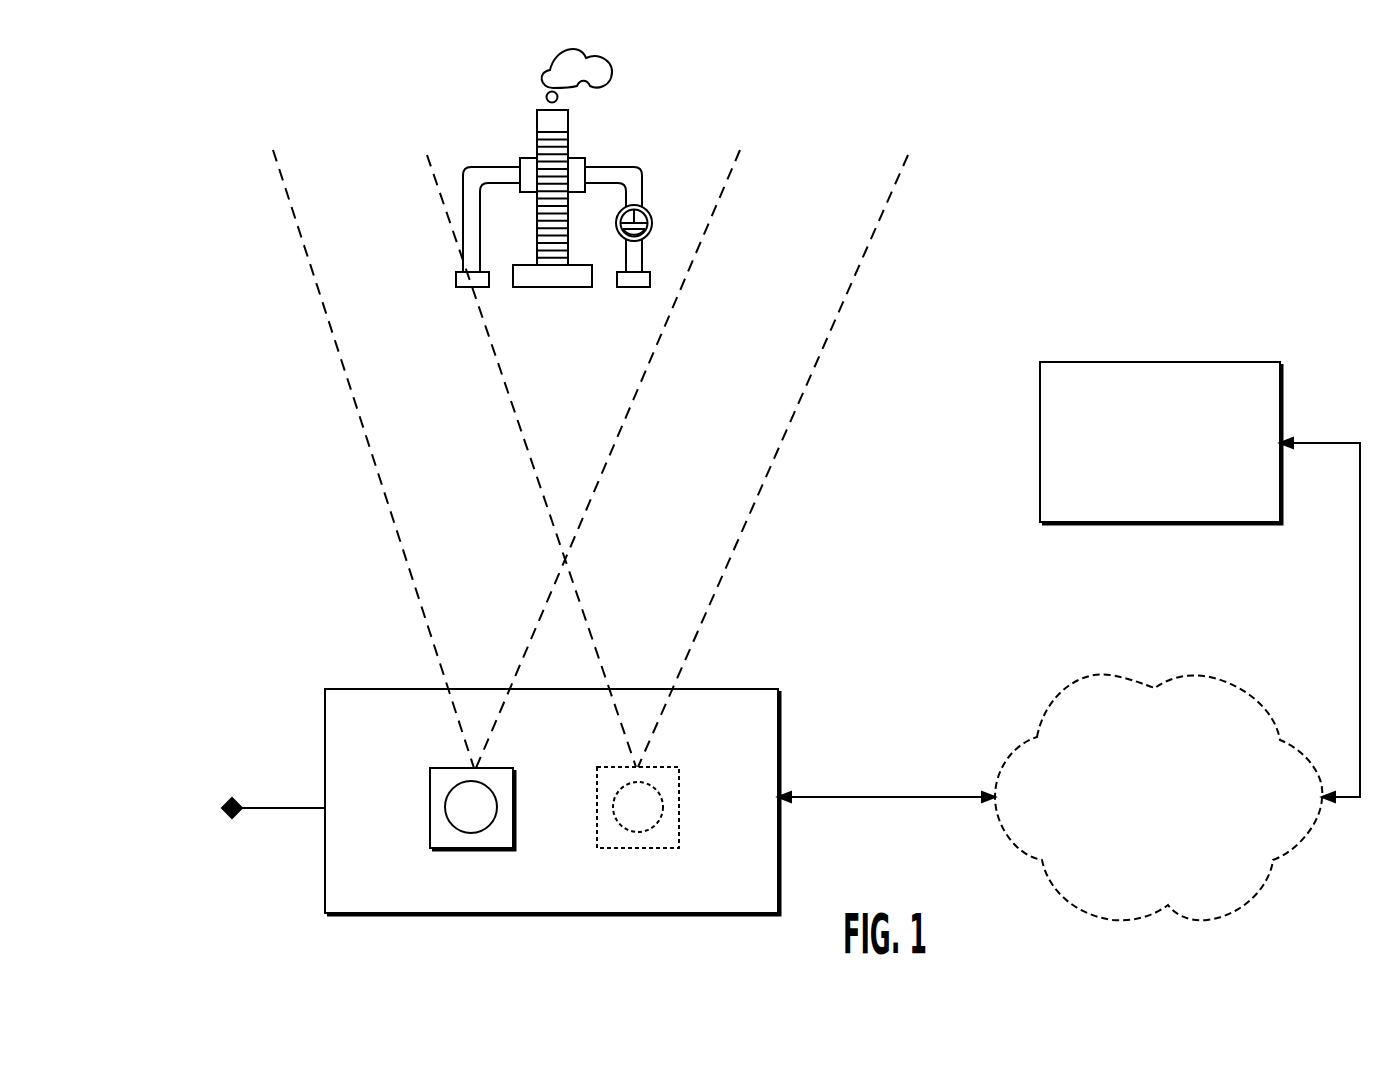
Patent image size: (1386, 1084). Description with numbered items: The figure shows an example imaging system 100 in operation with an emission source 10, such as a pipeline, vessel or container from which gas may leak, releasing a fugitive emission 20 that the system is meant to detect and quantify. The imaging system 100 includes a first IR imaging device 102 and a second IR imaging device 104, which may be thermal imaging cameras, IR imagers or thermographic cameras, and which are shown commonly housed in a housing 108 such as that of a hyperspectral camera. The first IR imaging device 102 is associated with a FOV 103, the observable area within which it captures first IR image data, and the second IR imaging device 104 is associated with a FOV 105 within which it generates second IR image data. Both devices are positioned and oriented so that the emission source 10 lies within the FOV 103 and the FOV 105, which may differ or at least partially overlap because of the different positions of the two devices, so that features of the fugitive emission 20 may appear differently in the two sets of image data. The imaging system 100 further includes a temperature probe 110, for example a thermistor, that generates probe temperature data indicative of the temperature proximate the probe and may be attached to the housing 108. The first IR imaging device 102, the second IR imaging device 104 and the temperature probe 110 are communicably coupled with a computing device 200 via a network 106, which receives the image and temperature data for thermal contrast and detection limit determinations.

The emission source 10 is at (557, 98).
The fugitive emission 20 is at (612, 77).
The imaging system 100 is at (567, 732).
The first IR imaging device 102 is at (465, 850).
The FOV 103 is at (403, 553).
The second IR imaging device 104 is at (635, 848).
The FOV 105 is at (775, 457).
The network 106 is at (1210, 677).
The housing 108 is at (650, 689).
The temperature probe 110 is at (226, 790).
The computing device 200 is at (1228, 362).